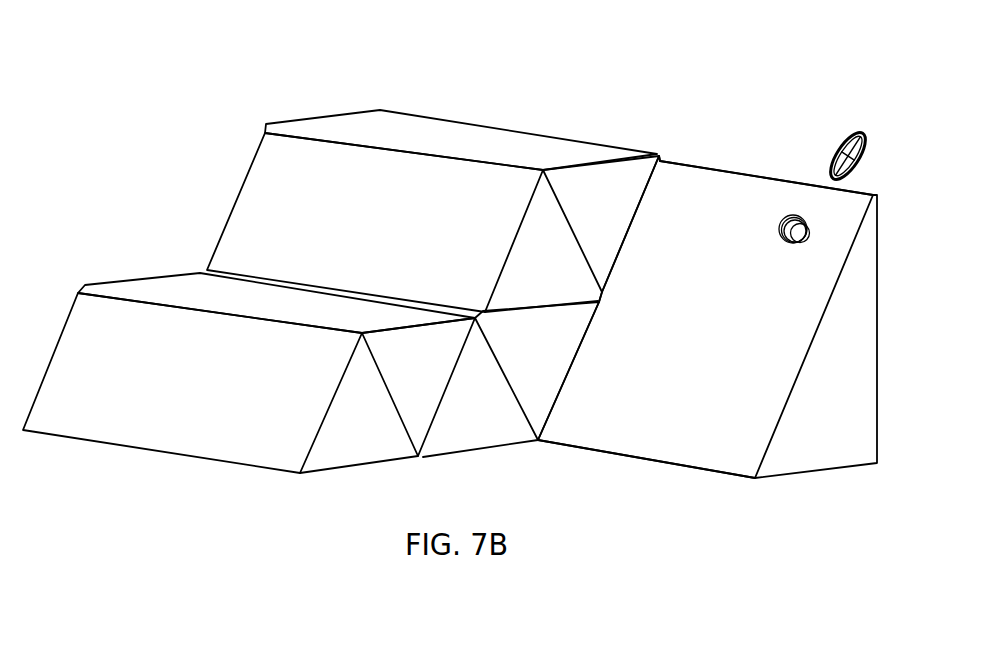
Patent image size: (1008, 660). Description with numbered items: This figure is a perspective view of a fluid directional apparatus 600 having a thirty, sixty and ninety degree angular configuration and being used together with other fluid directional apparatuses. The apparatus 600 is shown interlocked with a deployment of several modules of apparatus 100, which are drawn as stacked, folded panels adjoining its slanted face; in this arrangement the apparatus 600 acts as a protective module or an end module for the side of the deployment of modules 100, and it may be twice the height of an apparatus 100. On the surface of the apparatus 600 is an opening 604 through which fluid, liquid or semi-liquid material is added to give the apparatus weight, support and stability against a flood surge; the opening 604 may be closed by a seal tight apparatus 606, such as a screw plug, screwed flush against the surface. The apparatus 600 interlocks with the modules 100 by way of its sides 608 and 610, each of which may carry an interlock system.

The apparatus 100 is at (268, 152).
The fluid directional apparatus 600 is at (707, 326).
The opening 604 is at (777, 233).
The seal tight apparatus 606 is at (858, 130).
The side 608 is at (738, 172).
The side 610 is at (617, 413).